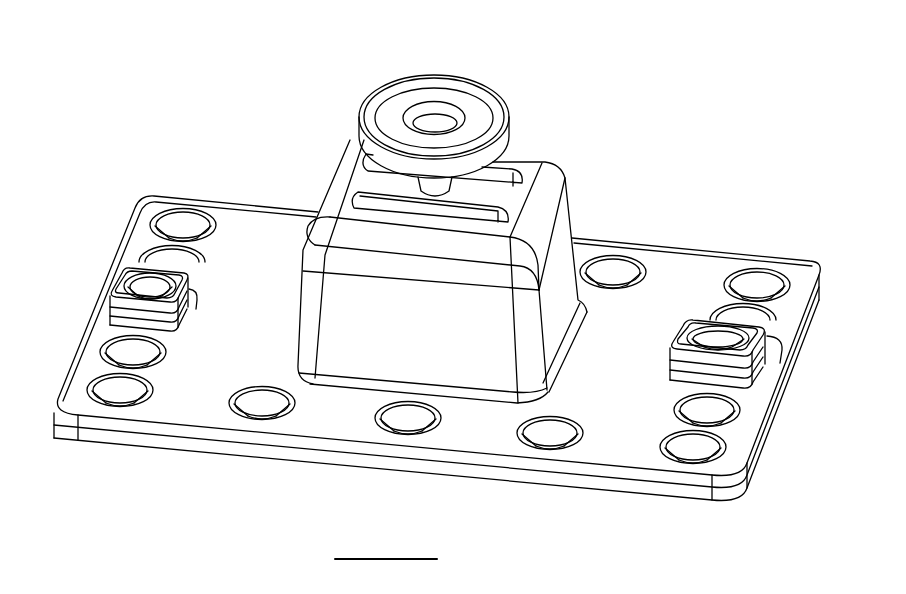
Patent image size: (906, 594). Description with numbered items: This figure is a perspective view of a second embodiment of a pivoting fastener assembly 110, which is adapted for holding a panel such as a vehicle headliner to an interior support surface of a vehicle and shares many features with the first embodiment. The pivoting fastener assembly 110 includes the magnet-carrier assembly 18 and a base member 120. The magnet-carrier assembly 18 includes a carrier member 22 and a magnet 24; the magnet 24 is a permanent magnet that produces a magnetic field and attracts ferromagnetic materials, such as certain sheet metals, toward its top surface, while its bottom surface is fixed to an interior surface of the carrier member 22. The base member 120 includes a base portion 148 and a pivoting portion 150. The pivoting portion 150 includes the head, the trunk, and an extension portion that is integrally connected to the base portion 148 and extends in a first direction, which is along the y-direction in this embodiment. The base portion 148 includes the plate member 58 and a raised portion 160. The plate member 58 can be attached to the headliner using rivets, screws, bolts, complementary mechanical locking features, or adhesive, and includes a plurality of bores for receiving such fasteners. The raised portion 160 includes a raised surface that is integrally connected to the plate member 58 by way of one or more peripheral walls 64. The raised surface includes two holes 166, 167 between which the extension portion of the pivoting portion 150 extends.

The pivoting fastener assembly 110 is at (636, 50).
The base member 120 is at (675, 114).
The plate member 58 is at (672, 249).
The base portion 148 is at (572, 166).
The raised portion 160 is at (556, 154).
The peripheral walls 64 is at (585, 198).
The hole 166 is at (368, 162).
The hole 167 is at (357, 200).
The pivoting portion 150 is at (292, 118).
The magnet-carrier assembly 18 is at (444, 66).
The carrier member 22 is at (485, 86).
The magnet 24 is at (414, 80).